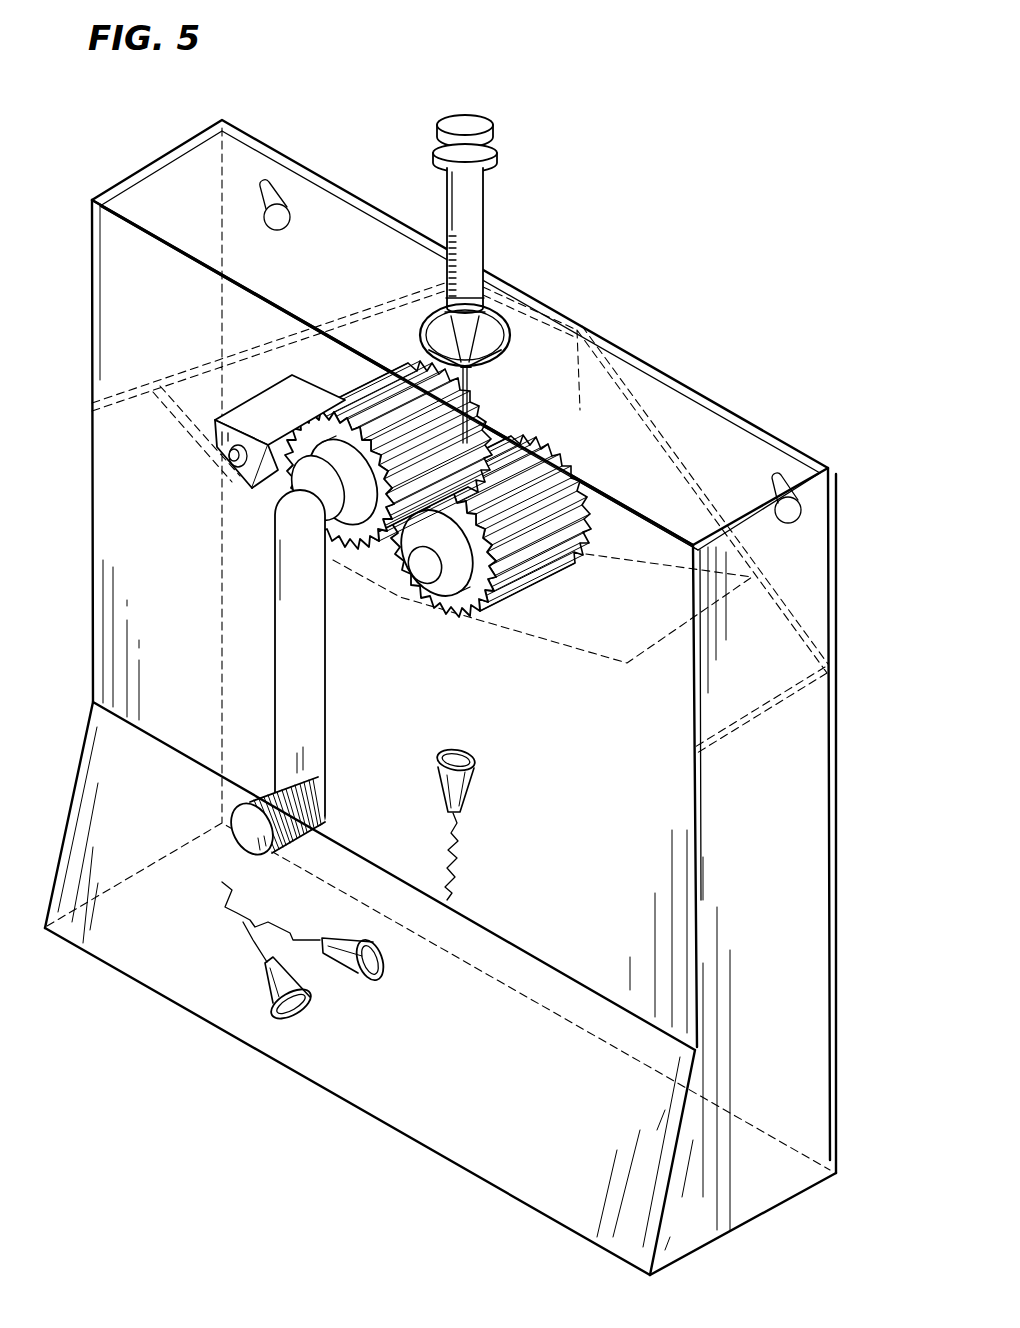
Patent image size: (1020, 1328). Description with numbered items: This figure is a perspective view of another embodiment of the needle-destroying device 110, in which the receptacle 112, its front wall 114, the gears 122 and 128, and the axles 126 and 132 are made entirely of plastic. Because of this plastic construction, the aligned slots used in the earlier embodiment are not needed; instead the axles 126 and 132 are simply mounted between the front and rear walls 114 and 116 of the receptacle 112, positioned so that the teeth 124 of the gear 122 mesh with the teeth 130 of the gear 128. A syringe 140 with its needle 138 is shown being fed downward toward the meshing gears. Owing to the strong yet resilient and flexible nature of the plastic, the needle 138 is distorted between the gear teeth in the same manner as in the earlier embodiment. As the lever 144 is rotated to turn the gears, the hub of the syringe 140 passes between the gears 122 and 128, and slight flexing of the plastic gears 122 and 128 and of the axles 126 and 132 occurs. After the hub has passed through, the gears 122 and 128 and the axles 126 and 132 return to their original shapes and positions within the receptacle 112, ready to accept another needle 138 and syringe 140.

The device 110 is at (126, 1031).
The receptacle 112 is at (545, 879).
The front wall 114 is at (650, 850).
The rear wall 116 is at (835, 520).
The gear 122 is at (268, 492).
The teeth 124 is at (333, 400).
The axle 126 is at (277, 488).
The gear 128 is at (487, 587).
The teeth 130 is at (418, 568).
The axle 132 is at (420, 548).
The needle 138 is at (467, 417).
The syringe 140 is at (510, 330).
The lever 144 is at (300, 692).